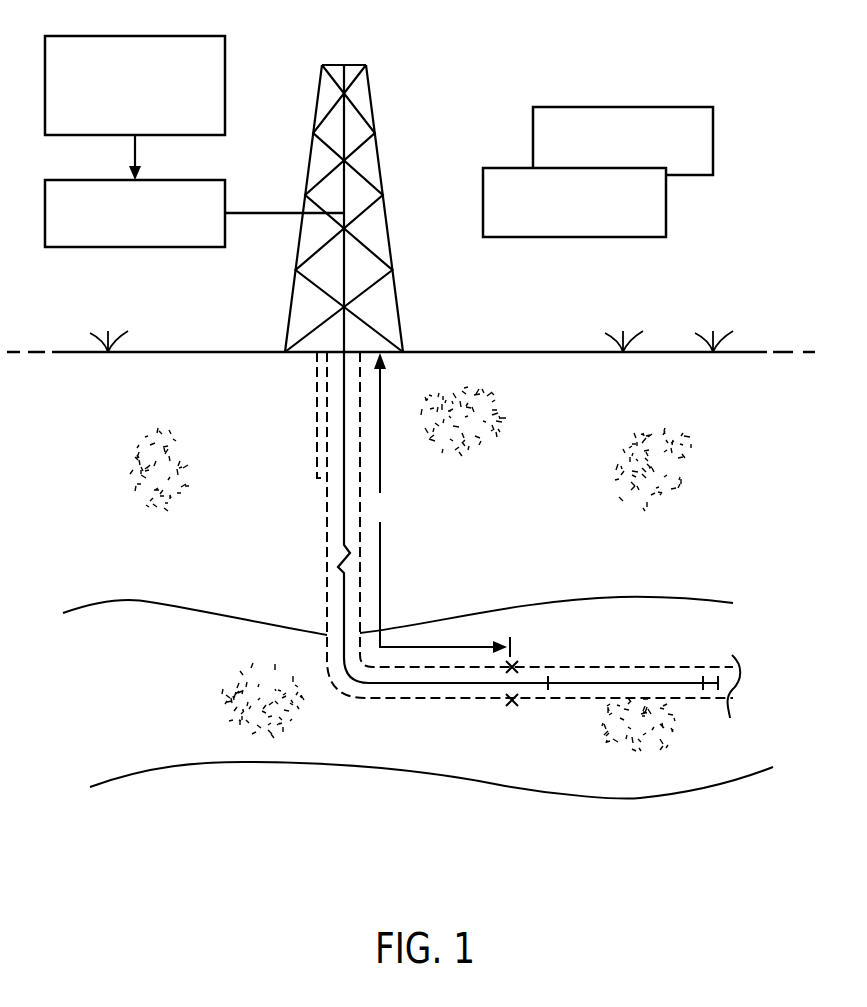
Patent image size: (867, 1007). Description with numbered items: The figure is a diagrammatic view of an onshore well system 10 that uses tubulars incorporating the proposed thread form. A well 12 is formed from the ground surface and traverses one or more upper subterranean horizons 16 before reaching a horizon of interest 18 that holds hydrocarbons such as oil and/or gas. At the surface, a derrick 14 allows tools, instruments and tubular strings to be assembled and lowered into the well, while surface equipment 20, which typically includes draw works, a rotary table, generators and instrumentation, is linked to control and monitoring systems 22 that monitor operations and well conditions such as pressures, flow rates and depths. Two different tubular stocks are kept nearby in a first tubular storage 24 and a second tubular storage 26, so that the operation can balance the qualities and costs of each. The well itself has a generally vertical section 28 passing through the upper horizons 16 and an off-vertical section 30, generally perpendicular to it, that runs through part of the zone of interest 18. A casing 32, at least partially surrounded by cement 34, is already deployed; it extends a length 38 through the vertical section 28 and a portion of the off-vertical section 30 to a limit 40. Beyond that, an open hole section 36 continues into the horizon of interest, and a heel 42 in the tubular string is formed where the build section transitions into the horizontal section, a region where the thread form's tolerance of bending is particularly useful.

The well system 10 is at (494, 68).
The well 12 is at (323, 593).
The derrick 14 is at (371, 103).
The subterranean horizons 16 is at (551, 479).
The horizons of interest 18 is at (392, 749).
The surface equipment 20 is at (172, 180).
The control and monitoring systems 22 is at (172, 35).
The tubular 1 storage 24 is at (666, 203).
The tubular 2 storage 26 is at (660, 107).
The vertical section 28 is at (344, 440).
The off-vertical section 30 is at (470, 700).
The casing 32 is at (327, 537).
The cement 34 is at (317, 400).
The open hole section 36 is at (693, 700).
The length 38 is at (437, 503).
The limit 40 is at (517, 667).
The heel 42 is at (352, 678).